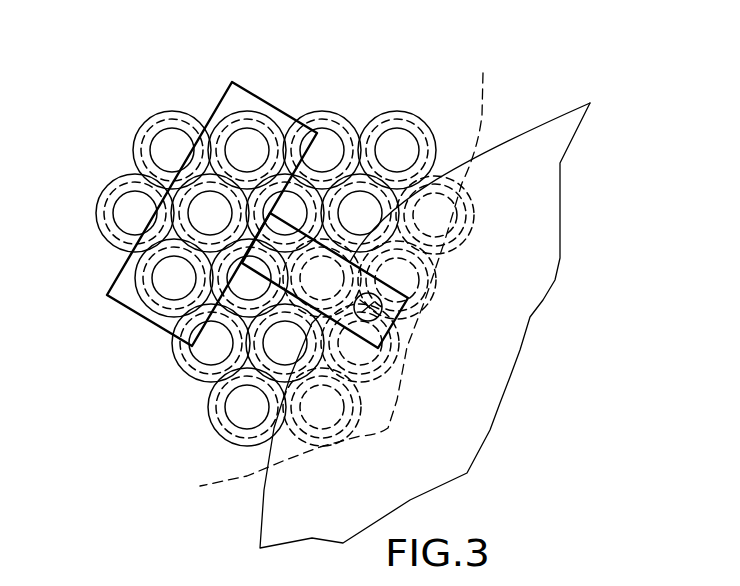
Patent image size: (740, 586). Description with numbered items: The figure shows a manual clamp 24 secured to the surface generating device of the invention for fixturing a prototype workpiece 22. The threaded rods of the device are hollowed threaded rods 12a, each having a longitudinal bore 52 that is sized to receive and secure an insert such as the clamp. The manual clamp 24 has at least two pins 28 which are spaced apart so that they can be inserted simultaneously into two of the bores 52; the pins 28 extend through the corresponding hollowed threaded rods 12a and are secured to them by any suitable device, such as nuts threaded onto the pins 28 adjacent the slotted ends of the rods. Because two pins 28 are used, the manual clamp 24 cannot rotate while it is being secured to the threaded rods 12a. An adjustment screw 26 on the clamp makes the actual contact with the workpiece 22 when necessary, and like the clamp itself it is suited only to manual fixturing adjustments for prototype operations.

The hollowed threaded rod 12a is at (355, 112).
The prototype workpiece 22 is at (515, 278).
The manual clamp 24 is at (222, 100).
The adjustment screw 26 is at (380, 320).
The pin 28 is at (247, 133).
The longitudinal bore 52 is at (132, 210).